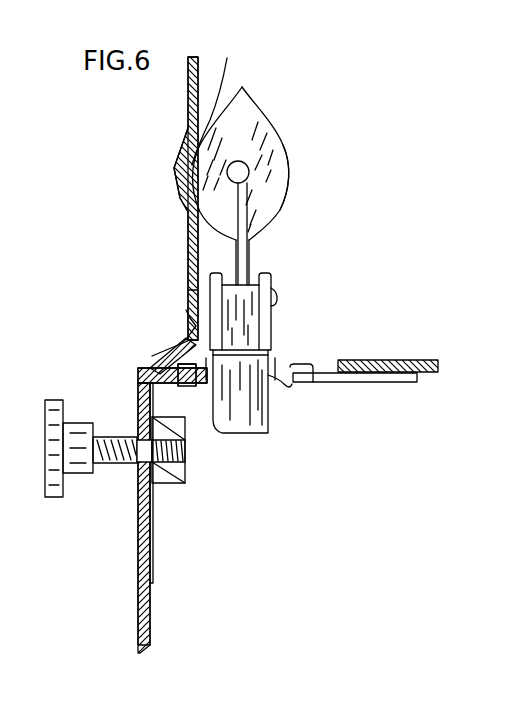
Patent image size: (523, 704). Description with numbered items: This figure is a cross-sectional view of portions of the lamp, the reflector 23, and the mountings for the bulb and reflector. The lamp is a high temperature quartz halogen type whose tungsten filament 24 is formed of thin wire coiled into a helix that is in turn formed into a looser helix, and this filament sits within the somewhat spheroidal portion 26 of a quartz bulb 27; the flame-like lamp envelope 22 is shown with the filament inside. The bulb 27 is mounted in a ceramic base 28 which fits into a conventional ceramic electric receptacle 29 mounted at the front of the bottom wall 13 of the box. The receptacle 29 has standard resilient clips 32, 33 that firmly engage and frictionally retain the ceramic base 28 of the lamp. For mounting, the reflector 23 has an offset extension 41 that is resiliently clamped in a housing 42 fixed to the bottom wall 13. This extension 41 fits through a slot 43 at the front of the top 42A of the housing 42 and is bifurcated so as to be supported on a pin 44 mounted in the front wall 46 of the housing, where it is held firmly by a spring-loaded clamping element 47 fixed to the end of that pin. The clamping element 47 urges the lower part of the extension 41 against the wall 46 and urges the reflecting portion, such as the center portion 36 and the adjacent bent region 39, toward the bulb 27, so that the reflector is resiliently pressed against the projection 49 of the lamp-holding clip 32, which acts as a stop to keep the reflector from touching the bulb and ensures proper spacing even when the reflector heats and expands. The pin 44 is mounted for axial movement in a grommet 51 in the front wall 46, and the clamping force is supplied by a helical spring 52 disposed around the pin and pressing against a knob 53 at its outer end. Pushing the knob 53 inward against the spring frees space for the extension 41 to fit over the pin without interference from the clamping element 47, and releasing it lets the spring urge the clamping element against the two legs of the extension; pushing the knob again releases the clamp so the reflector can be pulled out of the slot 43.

The bottom wall 13 is at (418, 361).
The flame 22 is at (294, 171).
The reflector 23 is at (119, 169).
The tungsten filament 24 is at (247, 181).
The spheroidal portion 26 is at (218, 102).
The quartz bulb 27 is at (274, 207).
The ceramic base 28 is at (256, 335).
The ceramic electric receptacle 29 is at (248, 408).
The resilient clip 32 is at (186, 316).
The resilient clip 33 is at (277, 292).
The center portion 36 is at (188, 110).
The plate bend 39 is at (186, 182).
The offset extension 41 is at (153, 500).
The housing 42 is at (82, 361).
The top of the housing 42A is at (323, 373).
The slot 43 is at (137, 381).
The pin 44 is at (186, 450).
The front wall 46 is at (138, 530).
The clamping element 47 is at (186, 478).
The projection 49 is at (188, 289).
The grommet 51 is at (127, 473).
The helical spring 52 is at (92, 426).
The knob 53 is at (48, 409).